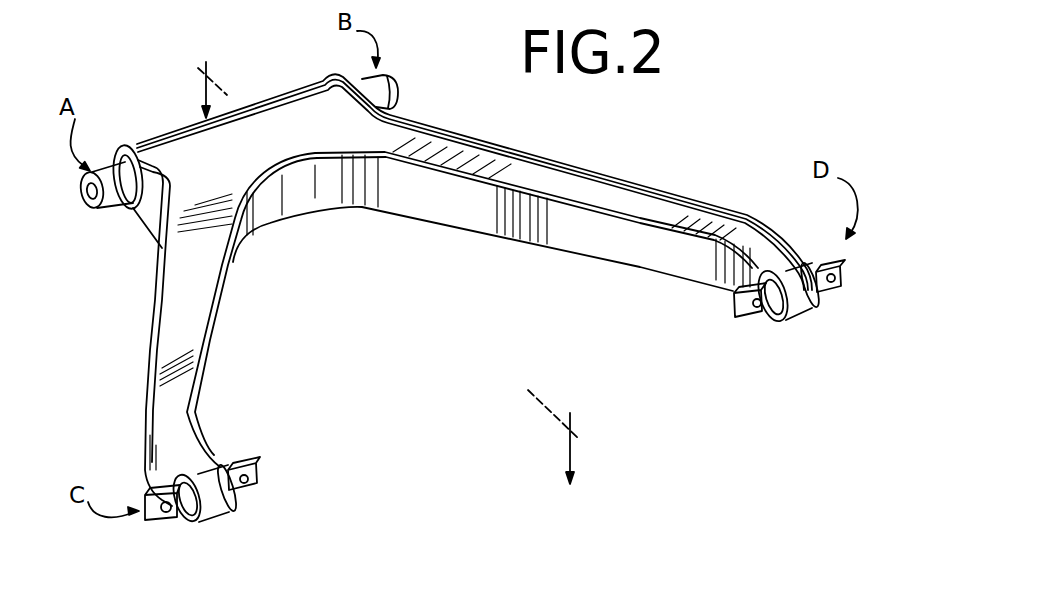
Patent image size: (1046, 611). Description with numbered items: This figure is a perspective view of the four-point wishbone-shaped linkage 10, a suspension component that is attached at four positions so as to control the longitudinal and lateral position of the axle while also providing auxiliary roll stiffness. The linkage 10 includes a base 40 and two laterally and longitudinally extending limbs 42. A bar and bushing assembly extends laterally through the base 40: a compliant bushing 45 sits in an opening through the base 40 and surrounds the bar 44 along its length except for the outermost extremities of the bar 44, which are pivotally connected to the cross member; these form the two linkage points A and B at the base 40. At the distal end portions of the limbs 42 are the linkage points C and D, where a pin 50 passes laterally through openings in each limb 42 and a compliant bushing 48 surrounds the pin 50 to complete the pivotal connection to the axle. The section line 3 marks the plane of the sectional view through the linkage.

The wishbone-shaped linkage 10 is at (403, 300).
The base 40 is at (279, 112).
The limbs 42 is at (177, 331).
The bar 44 is at (399, 89).
The bushing 45 is at (137, 209).
The bushing 48 is at (188, 522).
The pin 50 is at (258, 464).
The section line 3- 3 is at (389, 263).